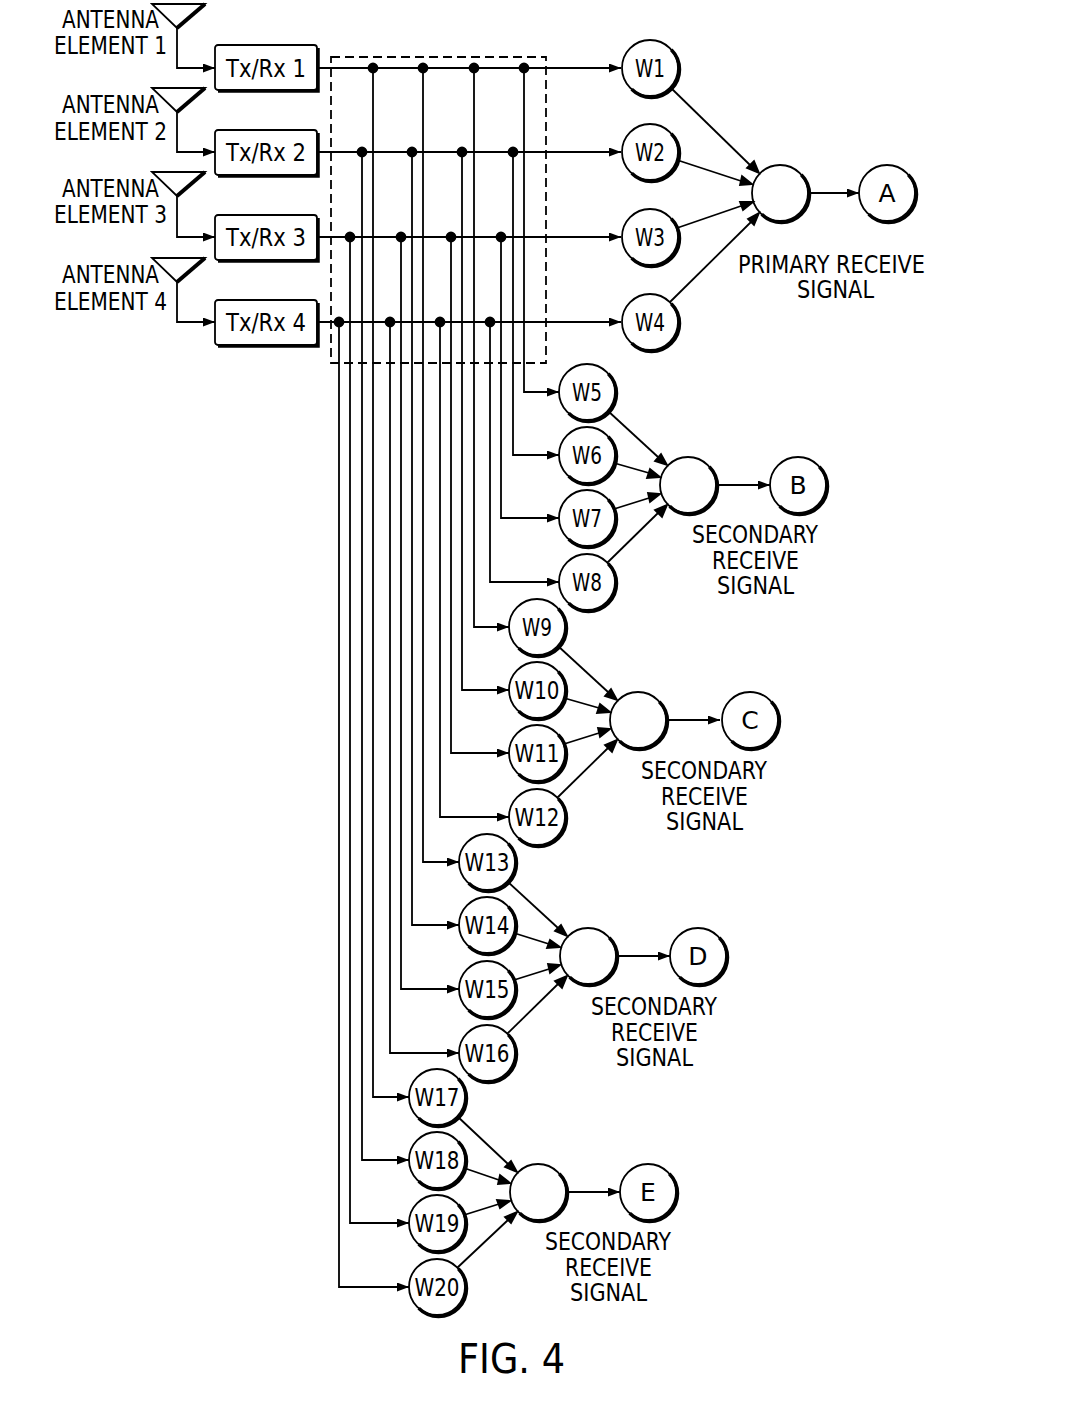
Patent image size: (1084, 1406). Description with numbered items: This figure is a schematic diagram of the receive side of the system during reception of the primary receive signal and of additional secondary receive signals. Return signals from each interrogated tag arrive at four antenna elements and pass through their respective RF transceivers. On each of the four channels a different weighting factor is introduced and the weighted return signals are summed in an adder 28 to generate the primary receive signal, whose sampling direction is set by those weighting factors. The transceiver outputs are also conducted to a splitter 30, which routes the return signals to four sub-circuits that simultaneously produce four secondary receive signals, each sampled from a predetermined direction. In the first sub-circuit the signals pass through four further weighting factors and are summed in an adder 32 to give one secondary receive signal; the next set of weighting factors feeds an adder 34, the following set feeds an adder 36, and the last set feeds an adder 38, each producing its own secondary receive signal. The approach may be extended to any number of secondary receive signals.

The adder 28 is at (777, 165).
The splitter 30 is at (456, 48).
The adder 32 is at (686, 457).
The adder 34 is at (636, 692).
The adder 36 is at (587, 928).
The adder 38 is at (537, 1164).